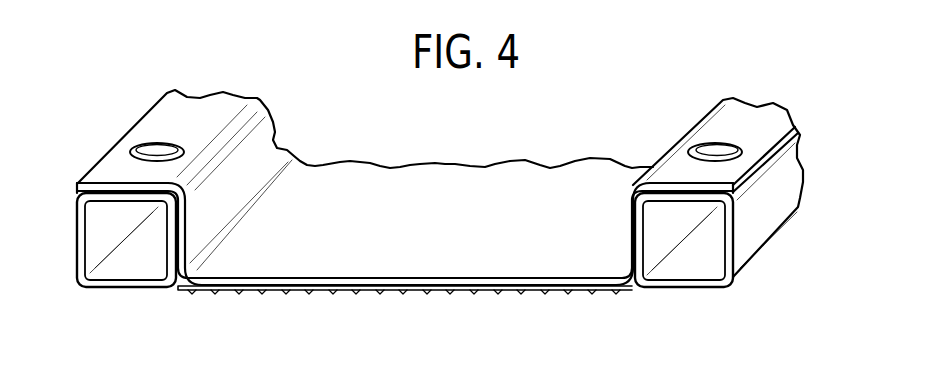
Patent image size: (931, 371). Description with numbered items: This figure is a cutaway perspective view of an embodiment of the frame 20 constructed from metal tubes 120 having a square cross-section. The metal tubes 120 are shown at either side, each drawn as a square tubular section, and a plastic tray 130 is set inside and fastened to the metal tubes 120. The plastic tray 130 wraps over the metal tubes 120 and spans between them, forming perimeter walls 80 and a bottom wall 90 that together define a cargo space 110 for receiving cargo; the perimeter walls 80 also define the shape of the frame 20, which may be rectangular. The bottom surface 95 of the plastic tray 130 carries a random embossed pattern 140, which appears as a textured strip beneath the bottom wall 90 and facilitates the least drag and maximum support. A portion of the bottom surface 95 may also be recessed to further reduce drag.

The frame 20 is at (653, 66).
The cargo space 110 is at (299, 70).
The plastic tray 130 is at (115, 173).
The perimeter walls 80 is at (77, 242).
The bottom wall 90 is at (512, 293).
The metal tubes 120 is at (122, 288).
The random embossed pattern 140 is at (297, 292).
The bottom surface 95 is at (473, 324).